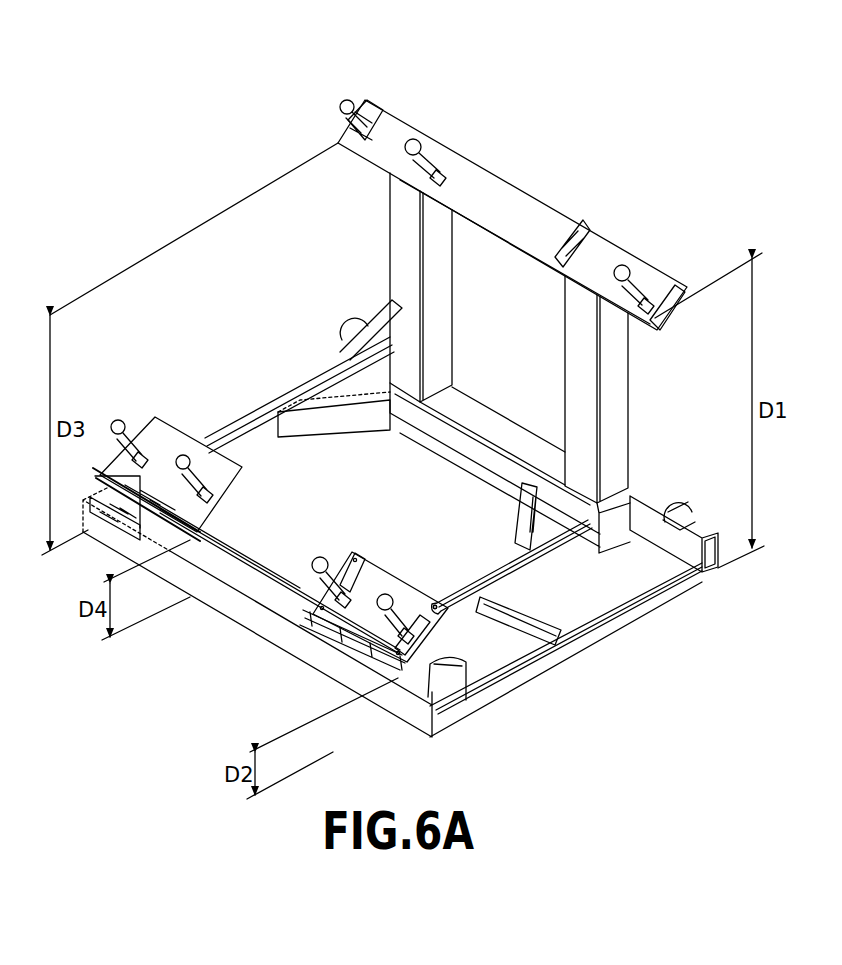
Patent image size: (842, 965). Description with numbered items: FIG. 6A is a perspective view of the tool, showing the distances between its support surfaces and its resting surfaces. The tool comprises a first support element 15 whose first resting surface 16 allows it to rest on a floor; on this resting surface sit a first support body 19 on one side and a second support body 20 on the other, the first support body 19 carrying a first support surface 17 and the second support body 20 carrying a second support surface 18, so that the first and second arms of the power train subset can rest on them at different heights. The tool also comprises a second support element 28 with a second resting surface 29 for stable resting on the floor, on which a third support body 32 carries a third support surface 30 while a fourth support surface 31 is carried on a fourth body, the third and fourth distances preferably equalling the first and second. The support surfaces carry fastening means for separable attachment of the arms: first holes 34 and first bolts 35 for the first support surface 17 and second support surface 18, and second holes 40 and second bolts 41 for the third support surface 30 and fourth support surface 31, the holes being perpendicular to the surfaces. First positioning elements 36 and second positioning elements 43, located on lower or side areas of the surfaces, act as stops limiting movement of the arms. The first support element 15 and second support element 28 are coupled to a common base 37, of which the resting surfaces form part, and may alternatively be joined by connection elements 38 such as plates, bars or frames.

The first support element 15 is at (568, 668).
The first resting surface 16 is at (448, 730).
The first support surface 17 is at (598, 243).
The second support surface 18 is at (233, 605).
The first support body 19 is at (583, 370).
The second support body 20 is at (343, 615).
The second support element 28 is at (266, 388).
The second resting surface 29 is at (140, 532).
The third support surface 30 is at (410, 127).
The fourth support surface 31 is at (180, 440).
The third support body 32 is at (403, 225).
The first holes 34 is at (660, 283).
The first bolts 35 is at (633, 273).
The first positioning elements 36 is at (572, 220).
The base 37 is at (298, 365).
The connection elements 38 is at (497, 430).
The second holes 40 is at (388, 107).
The second bolts 41 is at (347, 103).
The second positioning elements 43 is at (350, 133).